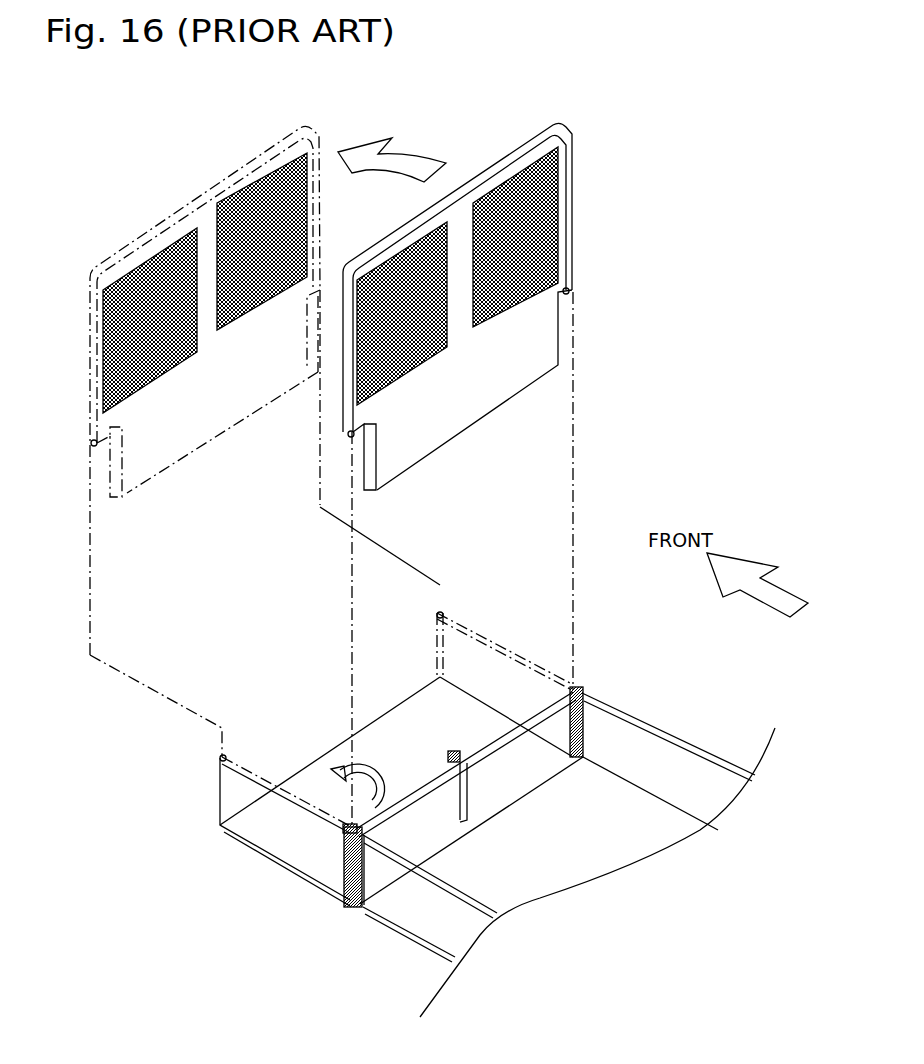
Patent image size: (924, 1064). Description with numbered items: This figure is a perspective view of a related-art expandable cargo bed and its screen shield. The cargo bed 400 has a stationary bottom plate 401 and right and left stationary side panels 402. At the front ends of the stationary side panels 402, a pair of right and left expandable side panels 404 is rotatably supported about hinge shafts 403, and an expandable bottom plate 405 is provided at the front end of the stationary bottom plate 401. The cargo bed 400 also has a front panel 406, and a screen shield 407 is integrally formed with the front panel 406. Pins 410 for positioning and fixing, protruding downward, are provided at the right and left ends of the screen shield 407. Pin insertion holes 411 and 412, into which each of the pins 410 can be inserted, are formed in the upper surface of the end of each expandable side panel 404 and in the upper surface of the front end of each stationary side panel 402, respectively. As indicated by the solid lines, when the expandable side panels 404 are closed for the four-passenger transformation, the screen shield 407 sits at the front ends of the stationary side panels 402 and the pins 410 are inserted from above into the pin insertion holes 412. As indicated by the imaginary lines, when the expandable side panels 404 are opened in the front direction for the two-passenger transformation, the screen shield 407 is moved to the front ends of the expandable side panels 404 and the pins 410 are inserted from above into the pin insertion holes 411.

The cargo bed 400 is at (773, 688).
The stationary bottom plate 401 is at (632, 863).
The stationary side panels 402 is at (677, 747).
The hinge shafts 403 is at (579, 688).
The expandable side panels 404 is at (546, 665).
The expandable bottom plate 405 is at (327, 768).
The front panel 406 is at (158, 457).
The screen shield 407 is at (178, 210).
The pins 410 is at (97, 443).
The pin insertion holes 411 is at (439, 612).
The pin insertion holes 412 is at (583, 692).